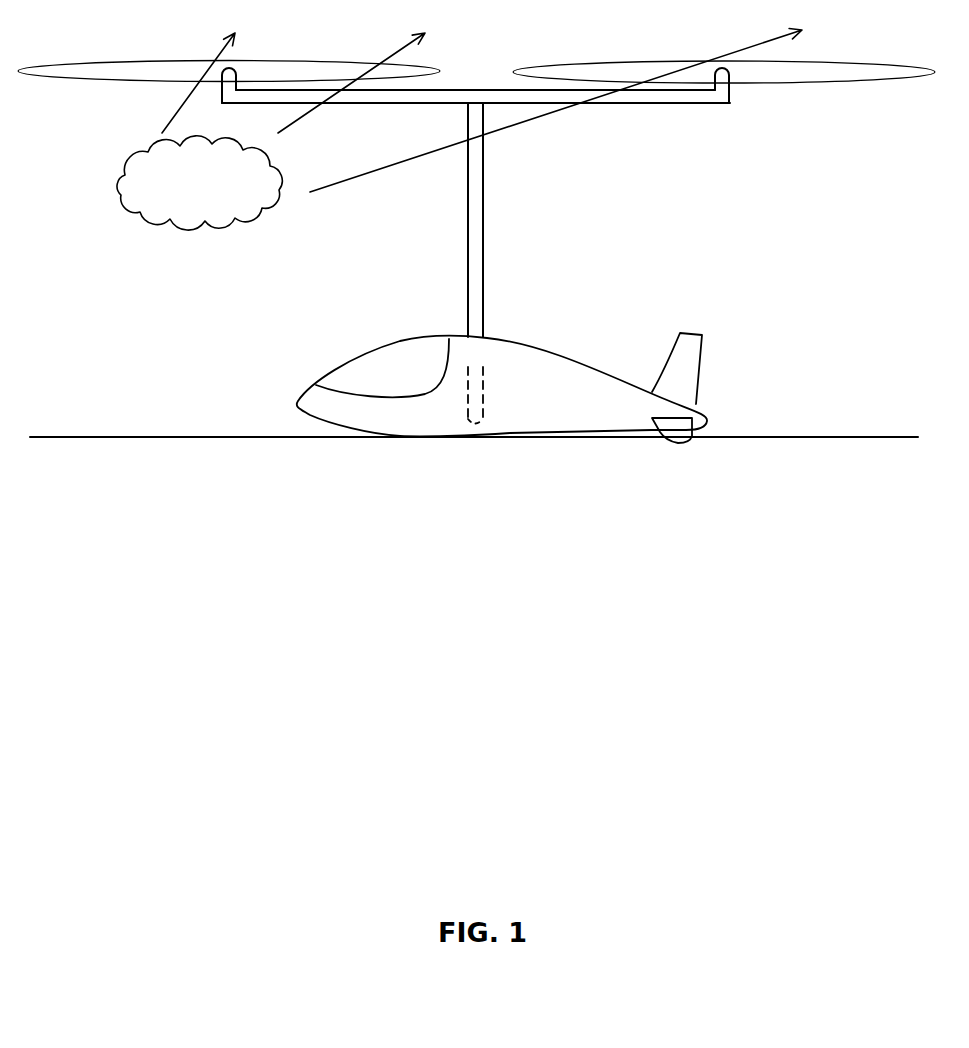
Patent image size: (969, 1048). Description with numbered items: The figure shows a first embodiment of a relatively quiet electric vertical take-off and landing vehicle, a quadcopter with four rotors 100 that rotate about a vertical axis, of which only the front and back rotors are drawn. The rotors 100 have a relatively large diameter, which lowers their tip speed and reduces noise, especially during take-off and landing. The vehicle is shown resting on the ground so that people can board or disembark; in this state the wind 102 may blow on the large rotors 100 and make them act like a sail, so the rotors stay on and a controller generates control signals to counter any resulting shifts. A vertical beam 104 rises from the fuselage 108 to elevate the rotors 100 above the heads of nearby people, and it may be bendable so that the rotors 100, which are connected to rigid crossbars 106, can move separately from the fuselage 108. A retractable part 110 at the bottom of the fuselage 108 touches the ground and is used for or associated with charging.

The rotors 100 is at (317, 61).
The wind 102 is at (192, 222).
The vertical beam 104 is at (485, 212).
The rigid crossbars 106 is at (681, 106).
The fuselage 108 is at (534, 348).
The retractable part 110 is at (483, 402).